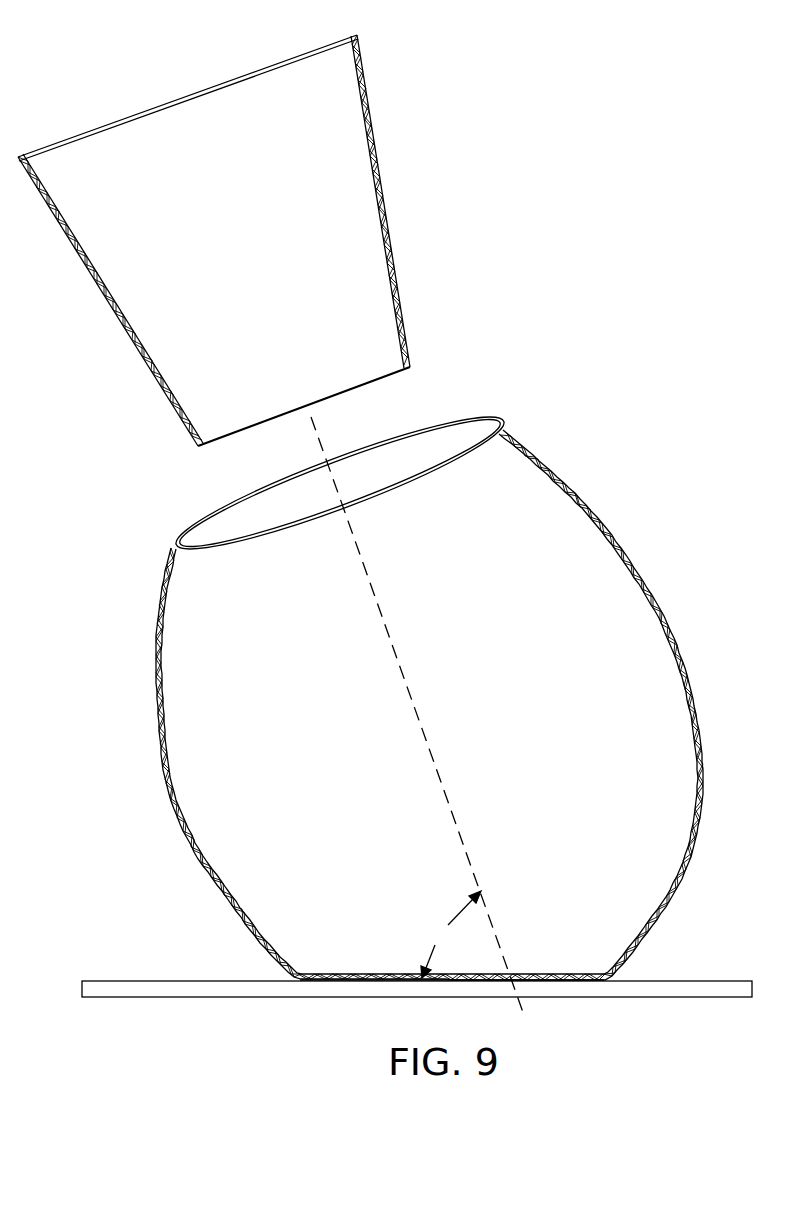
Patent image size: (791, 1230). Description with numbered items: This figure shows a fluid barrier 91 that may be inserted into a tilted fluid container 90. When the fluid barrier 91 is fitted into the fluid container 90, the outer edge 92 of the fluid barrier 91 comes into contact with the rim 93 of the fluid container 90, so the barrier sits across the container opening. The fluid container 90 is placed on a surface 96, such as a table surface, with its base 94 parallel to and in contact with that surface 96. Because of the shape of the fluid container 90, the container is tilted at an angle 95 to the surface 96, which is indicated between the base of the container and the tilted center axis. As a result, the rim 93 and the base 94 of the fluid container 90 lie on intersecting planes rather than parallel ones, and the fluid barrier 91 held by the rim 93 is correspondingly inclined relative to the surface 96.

The fluid container 90 is at (162, 736).
The fluid barrier 91 is at (228, 262).
The outer edge 92 is at (360, 38).
The rim 93 is at (492, 419).
The bowl bottom 94 is at (340, 975).
The angle 95 is at (418, 717).
The surface 96 is at (188, 998).